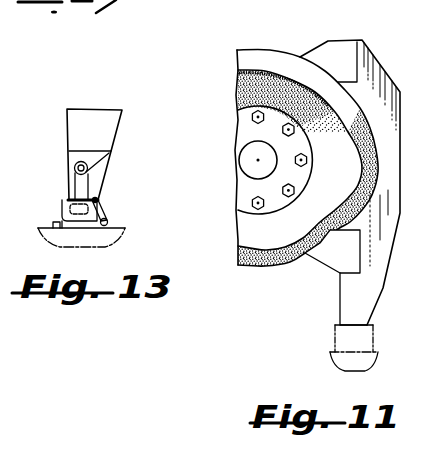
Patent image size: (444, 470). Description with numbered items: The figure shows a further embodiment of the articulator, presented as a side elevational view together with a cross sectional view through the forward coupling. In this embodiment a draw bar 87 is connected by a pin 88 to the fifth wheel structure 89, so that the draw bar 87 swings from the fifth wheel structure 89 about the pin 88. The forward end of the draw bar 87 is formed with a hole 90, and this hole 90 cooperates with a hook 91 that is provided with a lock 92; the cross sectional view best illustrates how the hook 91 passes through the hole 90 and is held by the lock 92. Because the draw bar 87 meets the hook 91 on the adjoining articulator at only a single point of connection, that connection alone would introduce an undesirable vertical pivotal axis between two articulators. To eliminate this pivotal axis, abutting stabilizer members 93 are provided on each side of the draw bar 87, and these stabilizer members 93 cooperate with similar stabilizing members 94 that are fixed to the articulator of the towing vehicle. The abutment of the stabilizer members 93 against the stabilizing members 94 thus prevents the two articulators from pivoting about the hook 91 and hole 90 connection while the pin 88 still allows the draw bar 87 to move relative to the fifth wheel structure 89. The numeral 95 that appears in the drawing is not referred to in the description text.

In FIG. 13, the draw bar 87 is at (70, 180).
In FIG. 13, the pin 88 is at (82, 161).
In FIG. 11, the fifth wheel structure 89 is at (400, 172).
In FIG. 13, the hole 90 is at (101, 179).
In FIG. 13, the hook 91 is at (63, 207).
In FIG. 13, the lock 92 is at (103, 210).
In FIG. 11, the stabilizer members 93 is at (375, 314).
In FIG. 11, the stabilizing members 94 is at (373, 343).
In FIG. 13, the stabilizing members 94 is at (101, 198).
In FIG. 13, the plate 95 is at (112, 156).